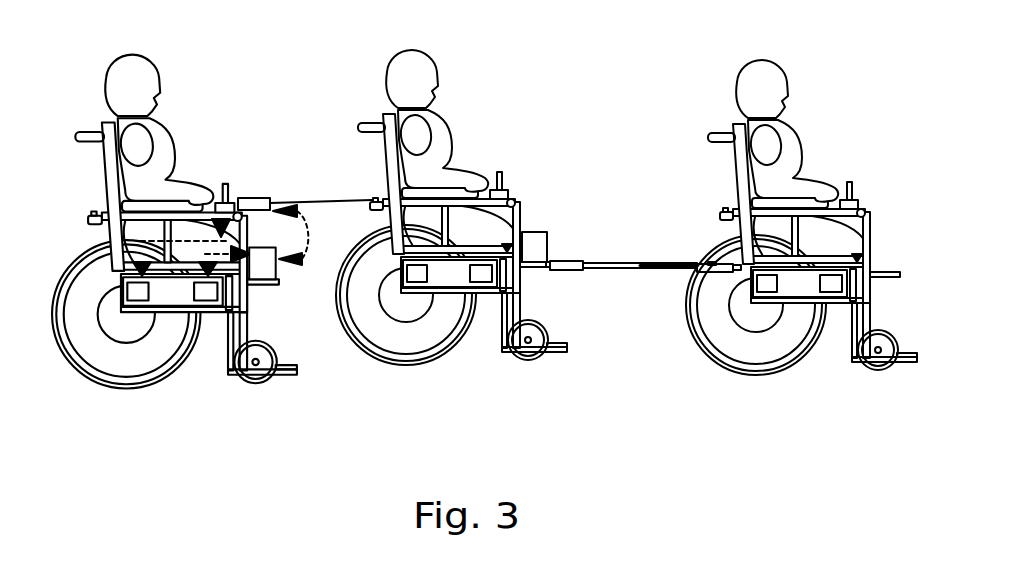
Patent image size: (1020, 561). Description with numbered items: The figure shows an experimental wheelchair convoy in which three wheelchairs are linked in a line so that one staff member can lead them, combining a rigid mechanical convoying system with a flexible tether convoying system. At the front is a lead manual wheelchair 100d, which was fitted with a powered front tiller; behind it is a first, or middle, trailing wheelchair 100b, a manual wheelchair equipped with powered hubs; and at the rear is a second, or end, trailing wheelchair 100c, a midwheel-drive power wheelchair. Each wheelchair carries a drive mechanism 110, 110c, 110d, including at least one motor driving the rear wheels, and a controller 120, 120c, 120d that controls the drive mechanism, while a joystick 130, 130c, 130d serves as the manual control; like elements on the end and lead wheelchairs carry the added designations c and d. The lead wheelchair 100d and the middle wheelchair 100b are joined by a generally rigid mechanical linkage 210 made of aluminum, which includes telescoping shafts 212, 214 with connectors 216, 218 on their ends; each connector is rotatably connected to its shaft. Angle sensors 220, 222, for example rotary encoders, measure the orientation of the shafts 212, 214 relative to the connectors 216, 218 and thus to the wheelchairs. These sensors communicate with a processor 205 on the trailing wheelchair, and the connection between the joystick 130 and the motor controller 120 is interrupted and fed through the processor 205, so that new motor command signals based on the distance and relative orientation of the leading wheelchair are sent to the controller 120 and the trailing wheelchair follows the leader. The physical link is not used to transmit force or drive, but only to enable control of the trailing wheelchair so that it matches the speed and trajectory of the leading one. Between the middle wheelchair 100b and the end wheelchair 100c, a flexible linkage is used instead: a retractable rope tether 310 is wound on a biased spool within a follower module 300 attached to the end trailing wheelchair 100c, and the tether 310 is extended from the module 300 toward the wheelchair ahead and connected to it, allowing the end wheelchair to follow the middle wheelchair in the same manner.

The second (end) trailing wheelchair 100c is at (108, 122).
The first (middle) trailing wheelchair 100b is at (378, 103).
The lead manual wheelchair 100d is at (718, 113).
The drive mechanism 110 is at (422, 283).
The drive mechanism of wheelchair 100c 110c is at (142, 299).
The drive mechanism of wheelchair 100d 110d is at (765, 293).
The controller 120 is at (473, 283).
The controller of wheelchair 100c 120c is at (203, 299).
The controller of wheelchair 100d 120d is at (818, 293).
The joystick 130 is at (497, 158).
The joystick of wheelchair 100c 130c is at (220, 177).
The joystick of wheelchair 100d 130d is at (840, 172).
The processor 205 is at (550, 187).
The mechanical linkage 210 is at (640, 263).
The telescoping shaft 212 is at (607, 272).
The telescoping shaft 214 is at (660, 275).
The connector 216 is at (555, 257).
The connector 218 is at (740, 272).
The angle sensor 220 is at (570, 272).
The angle sensor 222 is at (713, 261).
The follower module 300 is at (247, 190).
The rope tether 310 is at (303, 197).